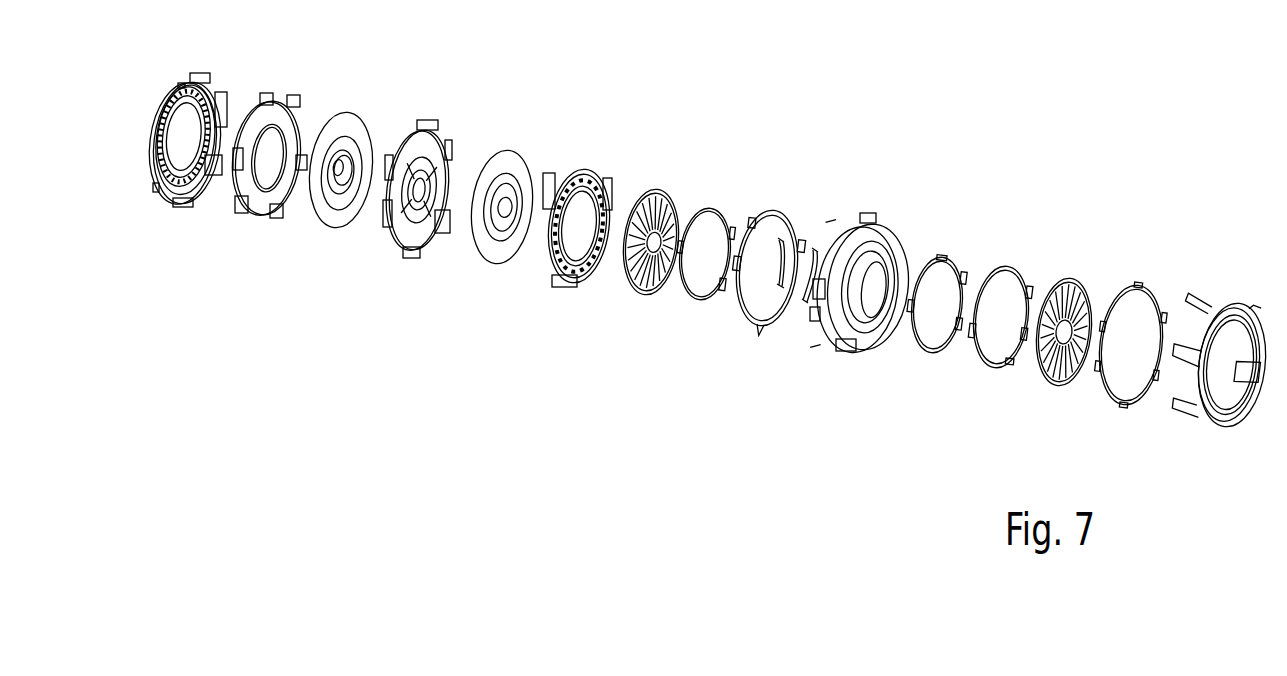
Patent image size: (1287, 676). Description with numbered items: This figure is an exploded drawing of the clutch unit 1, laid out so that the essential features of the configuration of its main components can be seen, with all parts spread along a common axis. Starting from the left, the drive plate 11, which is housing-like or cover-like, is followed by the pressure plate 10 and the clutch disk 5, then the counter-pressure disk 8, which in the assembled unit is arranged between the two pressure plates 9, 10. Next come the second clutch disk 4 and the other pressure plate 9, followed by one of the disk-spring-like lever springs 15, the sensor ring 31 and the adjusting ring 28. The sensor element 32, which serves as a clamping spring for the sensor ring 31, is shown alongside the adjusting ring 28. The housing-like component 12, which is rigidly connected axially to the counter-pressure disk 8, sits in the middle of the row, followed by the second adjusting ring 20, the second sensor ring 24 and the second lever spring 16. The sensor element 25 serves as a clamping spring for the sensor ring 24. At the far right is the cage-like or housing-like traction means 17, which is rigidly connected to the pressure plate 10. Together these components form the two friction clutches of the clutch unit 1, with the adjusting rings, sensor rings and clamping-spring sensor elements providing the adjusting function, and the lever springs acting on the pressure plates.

The clutch unit 1 is at (768, 163).
The clutch disk 4 is at (500, 257).
The clutch disk 5 is at (338, 228).
The counter-pressure disk 8 is at (408, 237).
The pressure plate 9 is at (567, 282).
The pressure plate 10 is at (260, 208).
The drive plate 11 is at (172, 192).
The housing-like component 12 is at (853, 335).
The lever spring 15 is at (635, 287).
The lever spring 16 is at (1050, 387).
The traction means 17 is at (1210, 427).
The adjusting ring 20 is at (920, 353).
The sensor ring 24 is at (977, 360).
The sensor element 25 is at (1112, 400).
The adjusting ring 28 is at (750, 315).
The sensor ring 31 is at (690, 297).
The sensor element 32 is at (815, 257).